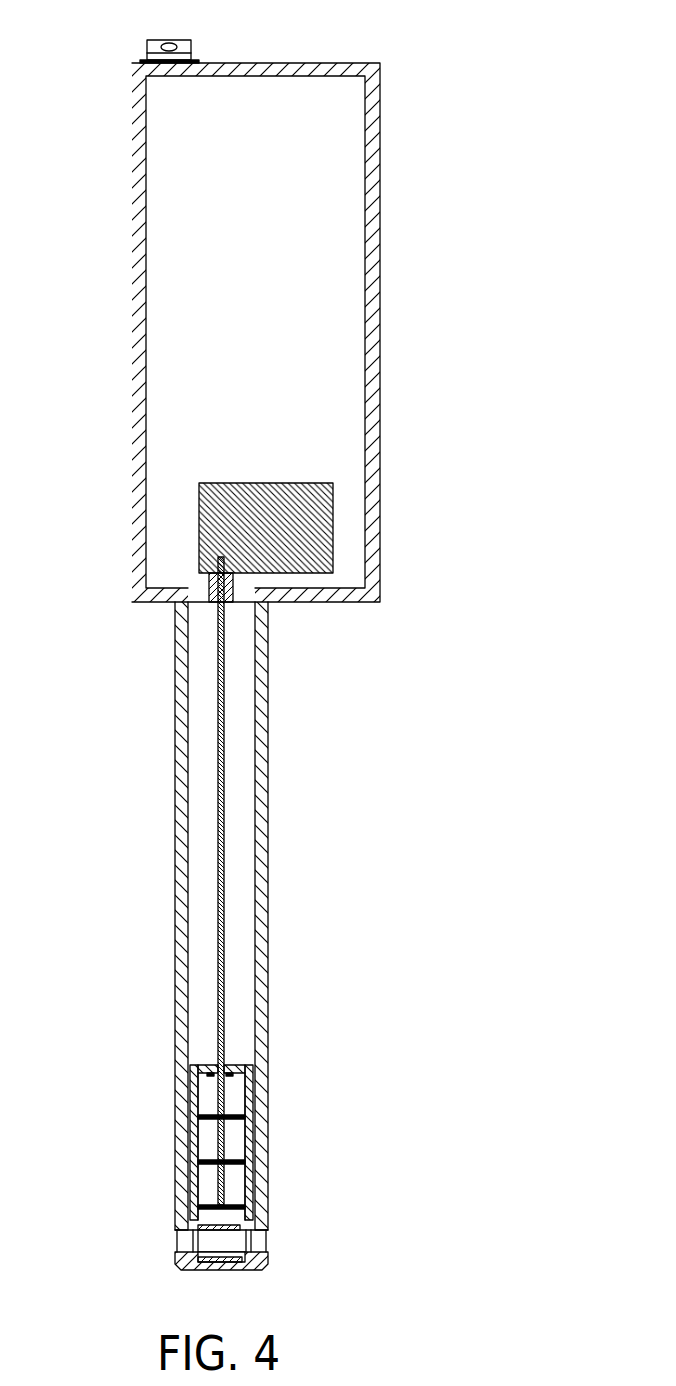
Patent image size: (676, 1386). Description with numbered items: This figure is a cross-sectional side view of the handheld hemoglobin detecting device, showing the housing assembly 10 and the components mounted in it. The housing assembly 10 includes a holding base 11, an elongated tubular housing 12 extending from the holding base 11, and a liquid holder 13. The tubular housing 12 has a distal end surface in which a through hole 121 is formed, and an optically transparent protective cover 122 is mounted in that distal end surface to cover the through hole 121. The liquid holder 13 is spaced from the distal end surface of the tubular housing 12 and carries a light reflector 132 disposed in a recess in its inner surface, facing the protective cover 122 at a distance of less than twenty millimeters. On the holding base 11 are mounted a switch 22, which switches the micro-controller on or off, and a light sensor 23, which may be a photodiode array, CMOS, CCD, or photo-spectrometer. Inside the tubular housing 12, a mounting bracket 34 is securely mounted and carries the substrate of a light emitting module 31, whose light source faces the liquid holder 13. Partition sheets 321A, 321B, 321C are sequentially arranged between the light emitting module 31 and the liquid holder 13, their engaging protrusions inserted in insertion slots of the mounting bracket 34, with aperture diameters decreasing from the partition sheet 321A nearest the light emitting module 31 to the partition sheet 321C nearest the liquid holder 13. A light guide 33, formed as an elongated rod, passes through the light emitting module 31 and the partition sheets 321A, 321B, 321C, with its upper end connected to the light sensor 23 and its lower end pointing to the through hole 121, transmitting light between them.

The housing assembly 10 is at (105, 558).
The holding base 11 is at (138, 236).
The tubular housing 12 is at (180, 720).
The liquid holder 13 is at (190, 1270).
The switch 22 is at (172, 40).
The light sensor 23 is at (268, 483).
The light emitting module 31 is at (238, 1060).
The light guide 33 is at (222, 773).
The mounting bracket 34 is at (250, 1128).
The partition sheet 321A is at (205, 1114).
The partition sheet 321B is at (205, 1159).
The partition sheet 321C is at (207, 1203).
The through hole 121 is at (226, 1226).
The protective cover 122 is at (236, 1232).
The light reflector 132 is at (242, 1264).